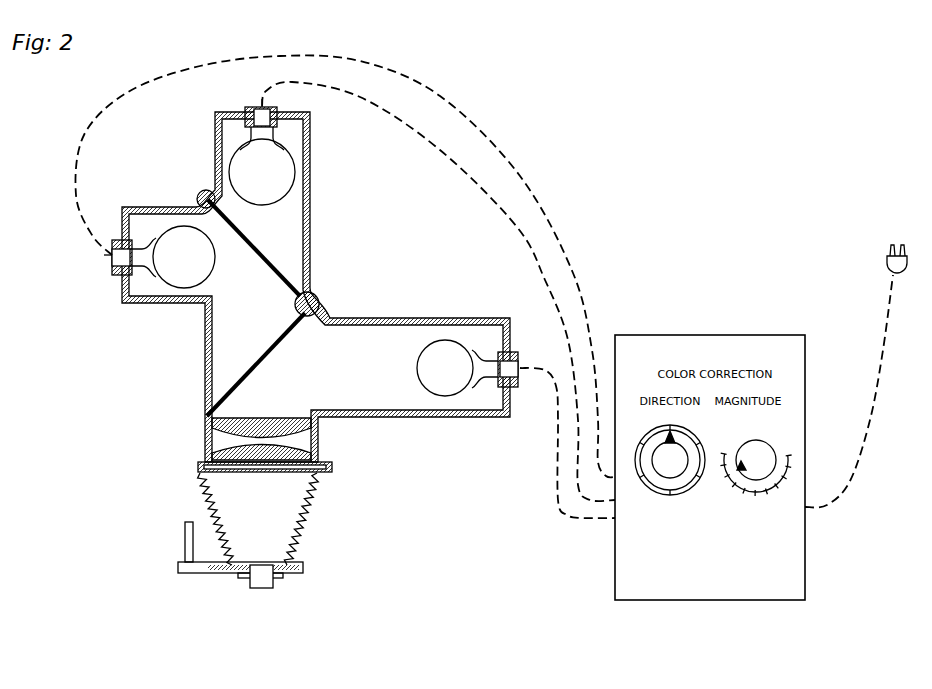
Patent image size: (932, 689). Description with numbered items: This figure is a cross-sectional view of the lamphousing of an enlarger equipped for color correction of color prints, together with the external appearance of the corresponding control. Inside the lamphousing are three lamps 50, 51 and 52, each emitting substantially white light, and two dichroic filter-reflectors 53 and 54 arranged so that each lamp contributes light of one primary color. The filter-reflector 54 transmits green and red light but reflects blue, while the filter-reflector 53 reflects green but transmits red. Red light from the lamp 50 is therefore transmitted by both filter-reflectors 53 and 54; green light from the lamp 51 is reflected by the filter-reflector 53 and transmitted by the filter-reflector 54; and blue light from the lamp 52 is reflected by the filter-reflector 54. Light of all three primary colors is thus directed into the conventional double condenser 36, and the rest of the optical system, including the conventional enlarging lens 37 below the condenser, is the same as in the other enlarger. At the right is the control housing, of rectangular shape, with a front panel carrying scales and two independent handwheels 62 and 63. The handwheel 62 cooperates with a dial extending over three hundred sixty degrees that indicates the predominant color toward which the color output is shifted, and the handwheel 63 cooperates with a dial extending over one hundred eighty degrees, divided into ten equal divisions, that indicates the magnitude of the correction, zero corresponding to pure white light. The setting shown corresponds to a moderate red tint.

The double condenser 36 is at (305, 425).
The enlarging lens 37 is at (270, 583).
The lamp 50 is at (273, 198).
The lamp 51 is at (207, 272).
The lamp 52 is at (430, 360).
The dichroic filter-reflector 53 is at (268, 258).
The dichroic filter-reflector 54 is at (282, 342).
The handwheel 62 is at (667, 470).
The handwheel 63 is at (764, 448).